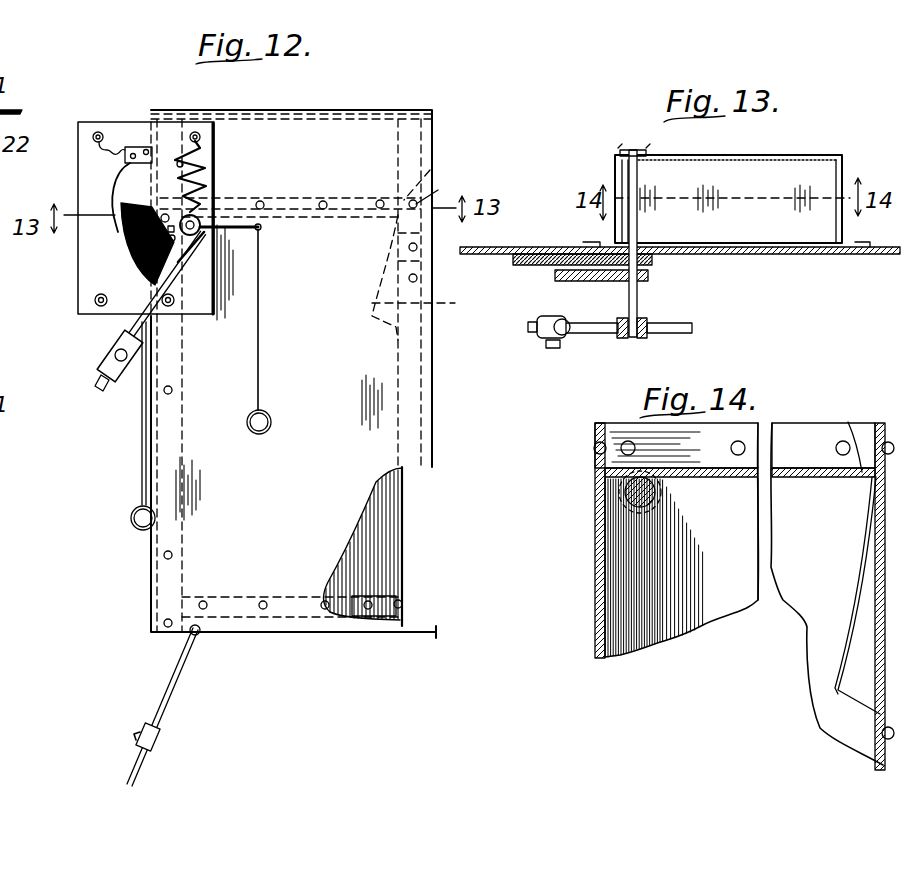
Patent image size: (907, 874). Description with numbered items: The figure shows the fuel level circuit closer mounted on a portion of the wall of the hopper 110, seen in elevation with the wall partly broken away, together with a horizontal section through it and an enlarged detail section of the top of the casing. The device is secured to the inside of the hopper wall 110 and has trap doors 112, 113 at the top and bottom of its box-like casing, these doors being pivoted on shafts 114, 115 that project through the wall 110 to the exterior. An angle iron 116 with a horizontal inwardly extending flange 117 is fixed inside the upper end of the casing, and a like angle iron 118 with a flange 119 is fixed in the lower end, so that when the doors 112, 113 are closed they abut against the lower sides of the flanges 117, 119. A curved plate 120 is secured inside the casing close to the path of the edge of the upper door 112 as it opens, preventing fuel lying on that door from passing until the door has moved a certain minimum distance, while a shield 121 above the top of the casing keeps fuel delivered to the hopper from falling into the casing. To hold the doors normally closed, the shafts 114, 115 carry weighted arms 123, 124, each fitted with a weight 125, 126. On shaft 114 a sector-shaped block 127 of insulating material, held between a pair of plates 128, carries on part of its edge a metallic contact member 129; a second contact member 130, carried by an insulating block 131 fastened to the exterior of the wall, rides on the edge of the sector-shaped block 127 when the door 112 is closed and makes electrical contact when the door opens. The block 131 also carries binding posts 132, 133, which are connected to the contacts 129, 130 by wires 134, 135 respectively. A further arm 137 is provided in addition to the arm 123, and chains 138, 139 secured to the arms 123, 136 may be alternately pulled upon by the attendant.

In FIG. 12, the wall of the hopper 110 is at (433, 445).
In FIG. 13, the wall of the hopper 110 is at (510, 238).
In FIG. 12, the trap door 112 is at (446, 174).
In FIG. 13, the trap door 112 is at (838, 166).
In FIG. 14, the trap door 112 is at (786, 470).
In FIG. 12, the trap door 113 is at (380, 622).
In FIG. 13, the shaft 114 is at (638, 296).
In FIG. 14, the shaft 114 is at (626, 500).
In FIG. 12, the shaft 115 is at (192, 645).
In FIG. 12, the angle iron 116 is at (450, 185).
In FIG. 14, the angle iron 116 is at (866, 432).
In FIG. 14, the flange 117 is at (841, 435).
In FIG. 12, the angle iron 118 is at (403, 598).
In FIG. 12, the flange 119 is at (406, 606).
In FIG. 12, the curved plate 120 is at (437, 277).
In FIG. 14, the curved plate 120 is at (855, 550).
In FIG. 12, the shield 121 is at (387, 110).
In FIG. 12, the weighted arm 123 is at (130, 320).
In FIG. 13, the weighted arm 123 is at (598, 336).
In FIG. 12, the weighted arm 124 is at (170, 712).
In FIG. 12, the weight 125 is at (105, 350).
In FIG. 13, the weight 125 is at (546, 345).
In FIG. 12, the weight 126 is at (158, 748).
In FIG. 12, the sector-shaped block 127 is at (112, 226).
In FIG. 13, the sector-shaped block 127 is at (565, 278).
In FIG. 12, the plates 128 is at (167, 215).
In FIG. 13, the plates 128 is at (650, 272).
In FIG. 12, the contact member 129 is at (128, 262).
In FIG. 12, the contact member 130 is at (124, 182).
In FIG. 12, the block of insulating material 131 is at (137, 147).
In FIG. 12, the binding post 132 is at (199, 134).
In FIG. 12, the binding post 133 is at (92, 137).
In FIG. 12, the wire 134 is at (207, 170).
In FIG. 12, the wire 135 is at (98, 155).
In FIG. 12, the arm 136 is at (218, 232).
In FIG. 13, the arm 136 is at (692, 328).
In FIG. 12, the arm 137 is at (196, 242).
In FIG. 13, the arm 137 is at (645, 337).
In FIG. 12, the chain 138 is at (134, 437).
In FIG. 12, the chain 139 is at (262, 368).